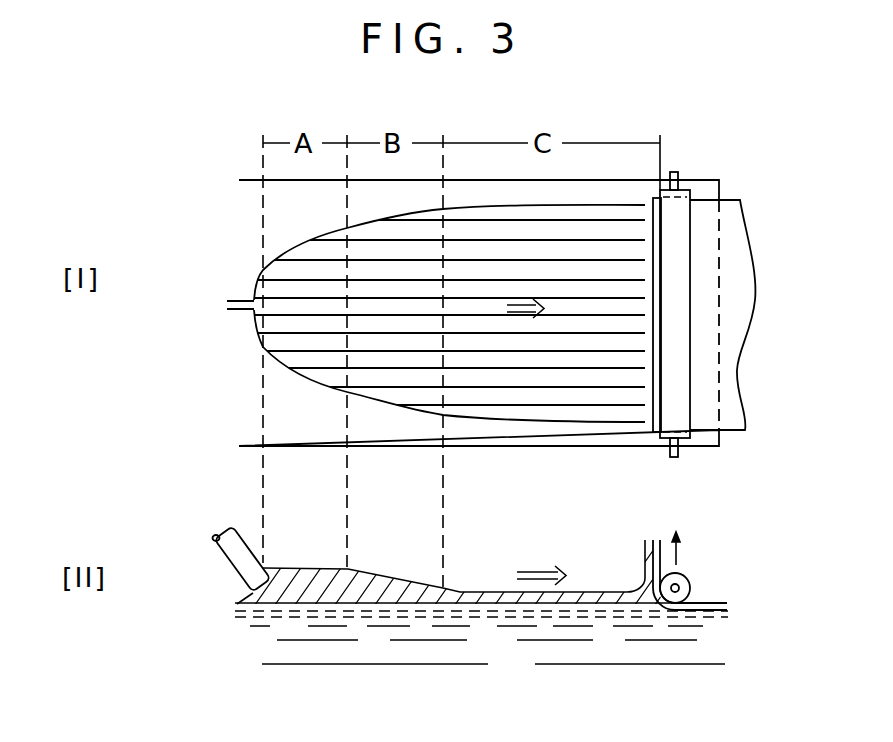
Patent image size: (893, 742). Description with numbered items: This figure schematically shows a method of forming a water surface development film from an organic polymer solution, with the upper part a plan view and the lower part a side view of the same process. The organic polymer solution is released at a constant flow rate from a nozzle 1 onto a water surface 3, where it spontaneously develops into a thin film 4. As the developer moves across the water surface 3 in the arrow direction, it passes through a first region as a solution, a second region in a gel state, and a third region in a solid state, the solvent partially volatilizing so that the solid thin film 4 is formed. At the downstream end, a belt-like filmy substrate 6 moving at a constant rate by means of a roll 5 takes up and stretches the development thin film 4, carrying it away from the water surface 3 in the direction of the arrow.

The nozzle 1 is at (228, 301).
The water surface 3 is at (237, 592).
The thin film 4 is at (598, 398).
The roll 5 is at (682, 223).
The filmy substrate 6 is at (738, 393).